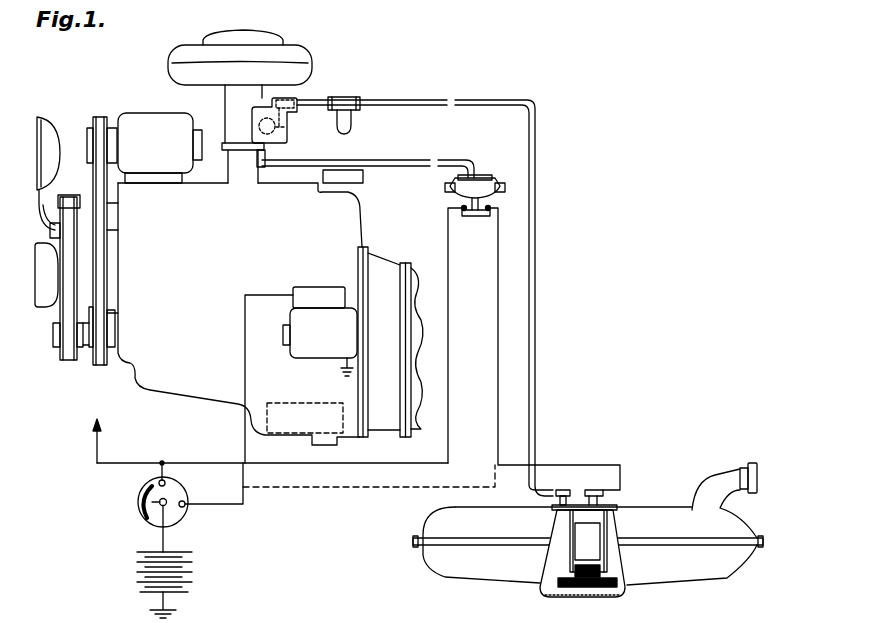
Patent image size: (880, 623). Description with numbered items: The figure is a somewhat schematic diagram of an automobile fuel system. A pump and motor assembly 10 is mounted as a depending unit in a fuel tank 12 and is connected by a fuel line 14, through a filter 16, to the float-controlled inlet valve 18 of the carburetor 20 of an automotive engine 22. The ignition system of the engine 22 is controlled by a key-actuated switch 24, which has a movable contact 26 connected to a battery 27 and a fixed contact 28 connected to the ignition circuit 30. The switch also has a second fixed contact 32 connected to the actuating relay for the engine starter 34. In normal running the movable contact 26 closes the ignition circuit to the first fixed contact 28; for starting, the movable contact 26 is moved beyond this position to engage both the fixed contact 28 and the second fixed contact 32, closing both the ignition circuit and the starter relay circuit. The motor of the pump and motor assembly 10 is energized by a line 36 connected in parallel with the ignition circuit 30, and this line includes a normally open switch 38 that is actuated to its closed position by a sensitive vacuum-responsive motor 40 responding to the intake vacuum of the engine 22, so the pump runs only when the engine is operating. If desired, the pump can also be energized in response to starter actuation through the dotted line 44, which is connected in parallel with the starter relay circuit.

The pump and motor assembly 10 is at (582, 543).
The fuel tank 12 is at (507, 572).
The fuel line 14 is at (534, 385).
The filter 16 is at (350, 121).
The float-controlled inlet valve 18 is at (293, 116).
The carburetor 20 is at (237, 103).
The automotive engine 22 is at (229, 279).
The key-actuated switch 24 is at (183, 520).
The movable contact 26 is at (143, 515).
The battery 27 is at (193, 580).
The fixed contact 28 is at (167, 483).
The ignition circuit 30 is at (95, 443).
The second fixed contact 32 is at (187, 506).
The engine starter 34 is at (301, 375).
The line 36 is at (403, 463).
The normally open switch 38 is at (480, 216).
The vacuum-responsive motor 40 is at (484, 182).
The line 44 is at (404, 489).